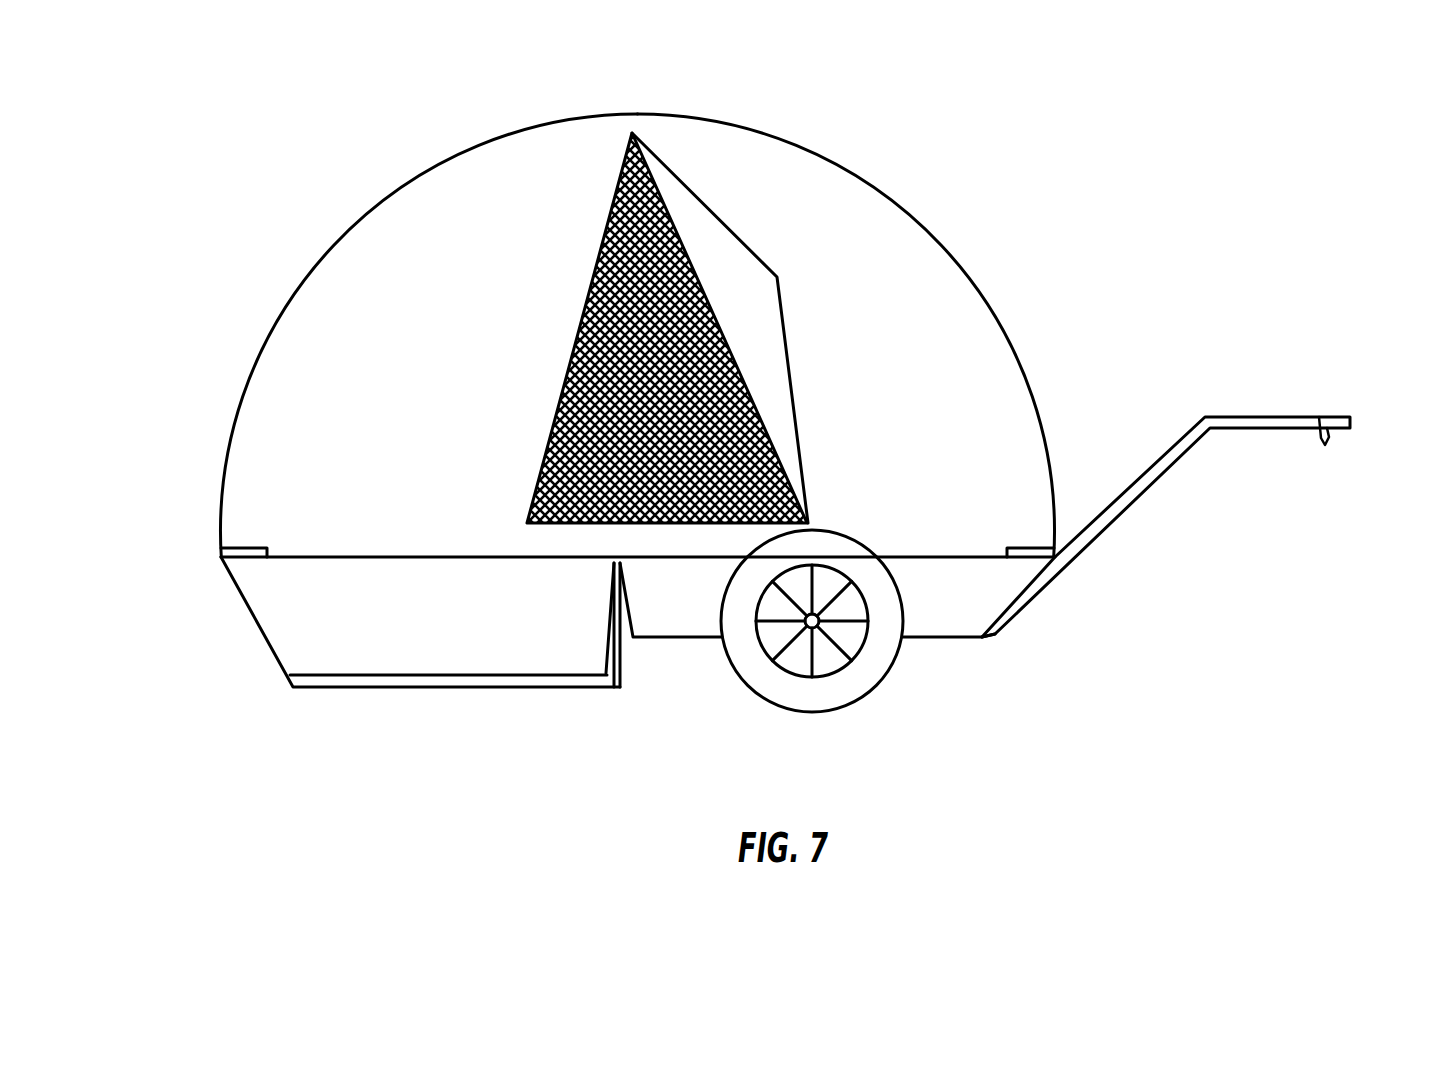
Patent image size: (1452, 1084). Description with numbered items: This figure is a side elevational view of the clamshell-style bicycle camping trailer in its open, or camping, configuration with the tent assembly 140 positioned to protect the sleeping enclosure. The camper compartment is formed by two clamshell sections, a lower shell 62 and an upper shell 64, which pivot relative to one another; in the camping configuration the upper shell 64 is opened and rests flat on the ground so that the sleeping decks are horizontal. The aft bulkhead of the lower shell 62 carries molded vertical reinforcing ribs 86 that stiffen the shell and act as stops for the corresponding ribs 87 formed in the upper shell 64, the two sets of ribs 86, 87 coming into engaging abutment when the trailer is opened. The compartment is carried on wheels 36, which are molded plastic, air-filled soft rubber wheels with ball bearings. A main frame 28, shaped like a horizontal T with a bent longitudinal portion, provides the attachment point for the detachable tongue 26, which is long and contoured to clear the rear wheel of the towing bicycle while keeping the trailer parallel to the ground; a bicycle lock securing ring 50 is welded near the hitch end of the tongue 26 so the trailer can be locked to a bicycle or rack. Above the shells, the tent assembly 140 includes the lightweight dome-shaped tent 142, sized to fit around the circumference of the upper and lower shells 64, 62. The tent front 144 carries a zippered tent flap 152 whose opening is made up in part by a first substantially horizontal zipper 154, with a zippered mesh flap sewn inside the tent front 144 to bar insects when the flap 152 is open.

The tent assembly 140 is at (323, 178).
The tent 142 is at (265, 373).
The tent front 144 is at (920, 250).
The zippered tent flap 152 is at (690, 212).
The first substantially horizontal zipper 154 is at (645, 523).
The upper shell 64 is at (392, 658).
The ribs 87 is at (610, 668).
The reinforcing ribs 86 is at (623, 630).
The wheels 36 is at (812, 692).
The lower shell 62 is at (922, 623).
The detachable tongue 26 is at (1220, 420).
The main frame 28 is at (1007, 618).
The bicycle lock securing ring 50 is at (1328, 445).